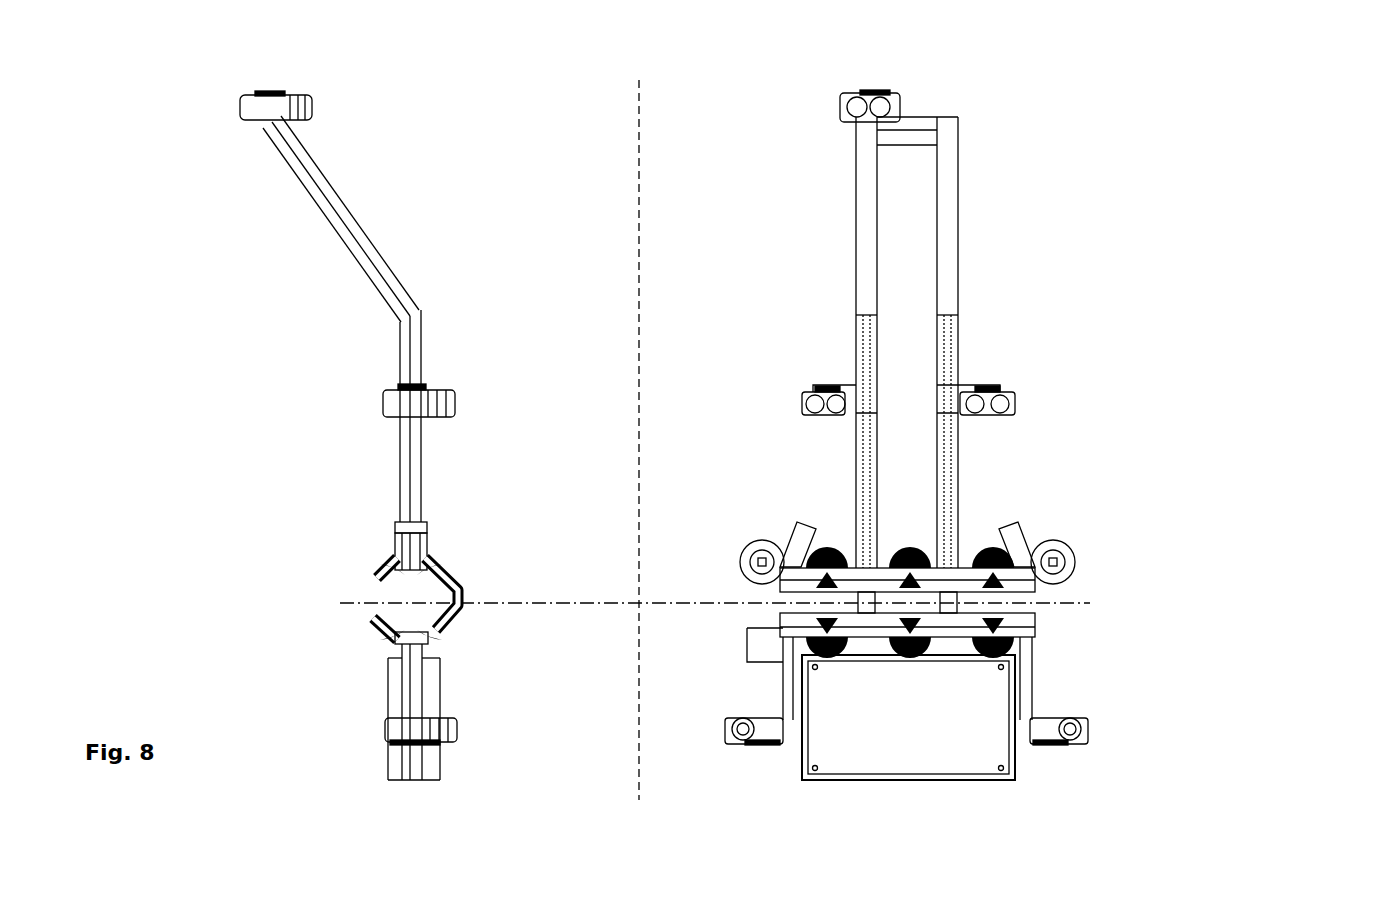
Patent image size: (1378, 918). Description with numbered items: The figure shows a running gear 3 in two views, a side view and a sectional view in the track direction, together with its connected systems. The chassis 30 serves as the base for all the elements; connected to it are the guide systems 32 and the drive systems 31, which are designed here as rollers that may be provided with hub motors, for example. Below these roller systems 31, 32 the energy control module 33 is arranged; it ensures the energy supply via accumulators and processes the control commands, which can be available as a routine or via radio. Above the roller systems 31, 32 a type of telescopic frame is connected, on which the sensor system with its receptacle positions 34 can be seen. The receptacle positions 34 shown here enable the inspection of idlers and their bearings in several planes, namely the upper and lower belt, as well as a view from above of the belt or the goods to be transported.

The running gear 3 is at (1167, 108).
The chassis 30 is at (430, 532).
The drive systems 31 is at (1067, 548).
The guide systems 32 is at (925, 558).
The energy control module 33 is at (955, 705).
The receptacle positions 34 is at (845, 112).